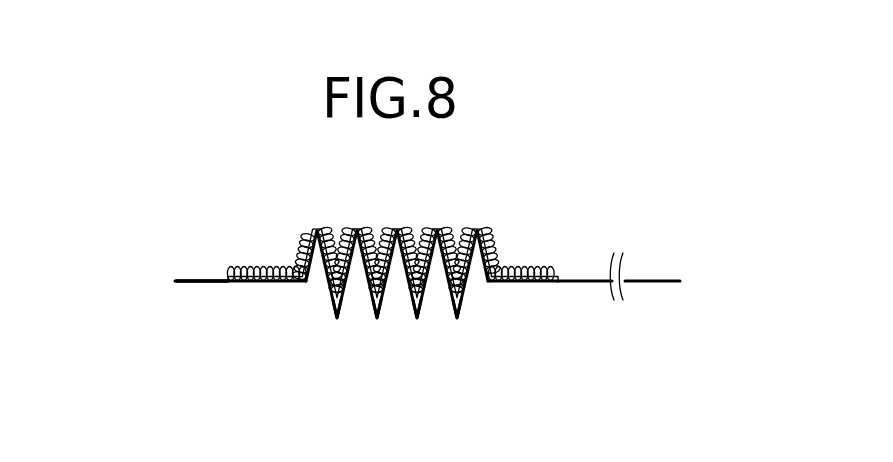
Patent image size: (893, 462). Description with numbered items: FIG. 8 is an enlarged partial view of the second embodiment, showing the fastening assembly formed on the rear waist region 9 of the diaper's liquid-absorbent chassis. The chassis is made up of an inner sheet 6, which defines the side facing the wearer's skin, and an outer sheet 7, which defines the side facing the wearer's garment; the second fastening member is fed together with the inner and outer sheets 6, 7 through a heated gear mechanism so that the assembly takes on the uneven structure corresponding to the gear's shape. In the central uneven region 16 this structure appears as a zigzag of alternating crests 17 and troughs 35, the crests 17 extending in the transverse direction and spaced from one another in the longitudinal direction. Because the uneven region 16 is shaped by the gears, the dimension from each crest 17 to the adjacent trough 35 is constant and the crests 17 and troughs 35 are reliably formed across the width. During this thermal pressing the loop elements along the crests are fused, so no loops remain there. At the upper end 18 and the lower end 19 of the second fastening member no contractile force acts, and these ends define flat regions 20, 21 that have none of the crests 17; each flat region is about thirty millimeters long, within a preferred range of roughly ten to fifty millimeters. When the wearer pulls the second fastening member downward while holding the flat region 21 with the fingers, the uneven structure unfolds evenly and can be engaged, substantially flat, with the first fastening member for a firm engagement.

The inner sheet 6 is at (183, 279).
The outer sheet 7 is at (183, 283).
The rear waist region 9 is at (162, 286).
The uneven region 16 is at (467, 224).
The crests 17 is at (397, 231).
The upper end 18 is at (233, 267).
The lower end 19 is at (557, 267).
The flat region 20 is at (262, 284).
The flat region 21 is at (522, 284).
The troughs 35 is at (417, 320).